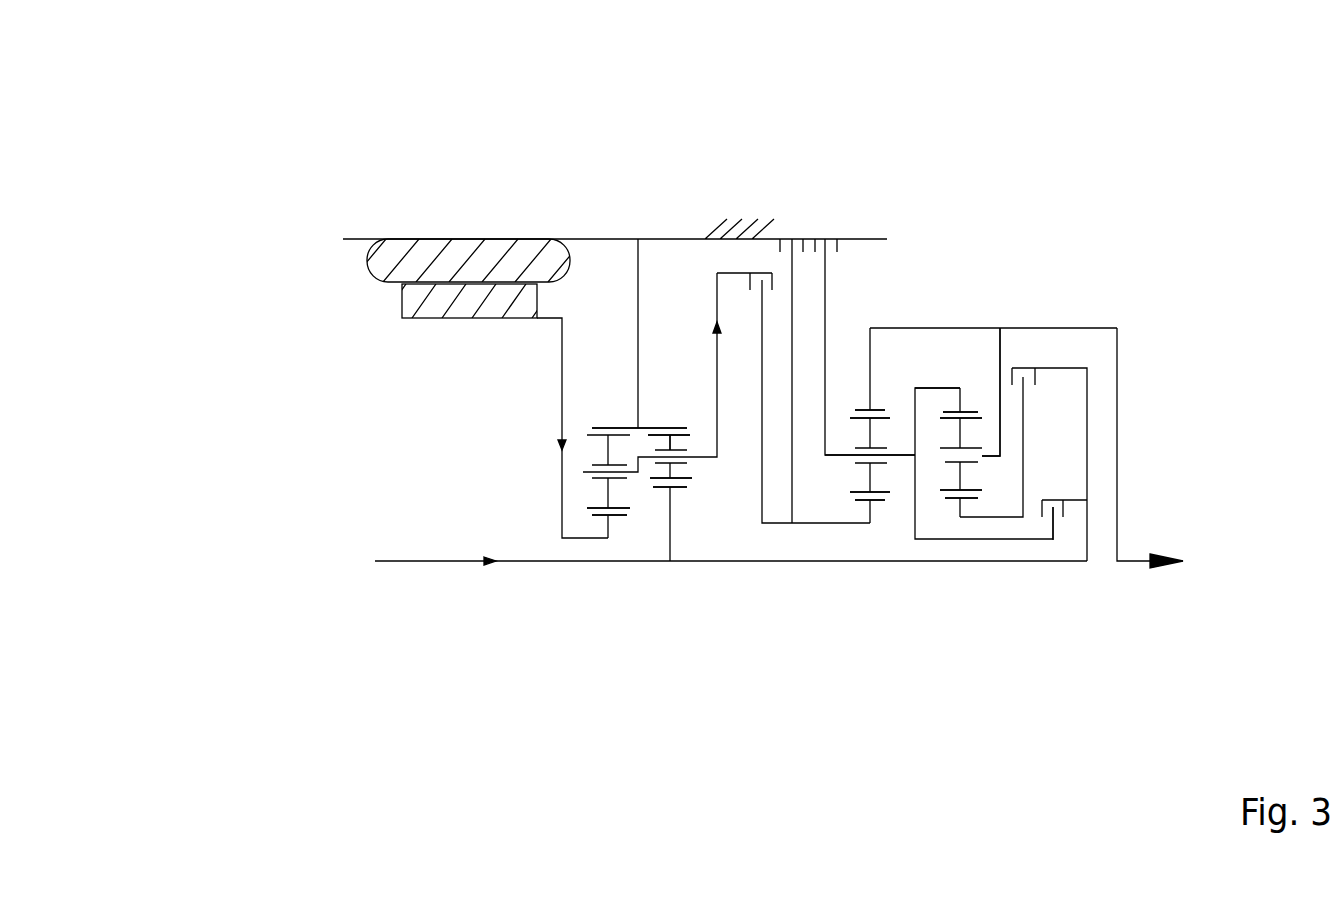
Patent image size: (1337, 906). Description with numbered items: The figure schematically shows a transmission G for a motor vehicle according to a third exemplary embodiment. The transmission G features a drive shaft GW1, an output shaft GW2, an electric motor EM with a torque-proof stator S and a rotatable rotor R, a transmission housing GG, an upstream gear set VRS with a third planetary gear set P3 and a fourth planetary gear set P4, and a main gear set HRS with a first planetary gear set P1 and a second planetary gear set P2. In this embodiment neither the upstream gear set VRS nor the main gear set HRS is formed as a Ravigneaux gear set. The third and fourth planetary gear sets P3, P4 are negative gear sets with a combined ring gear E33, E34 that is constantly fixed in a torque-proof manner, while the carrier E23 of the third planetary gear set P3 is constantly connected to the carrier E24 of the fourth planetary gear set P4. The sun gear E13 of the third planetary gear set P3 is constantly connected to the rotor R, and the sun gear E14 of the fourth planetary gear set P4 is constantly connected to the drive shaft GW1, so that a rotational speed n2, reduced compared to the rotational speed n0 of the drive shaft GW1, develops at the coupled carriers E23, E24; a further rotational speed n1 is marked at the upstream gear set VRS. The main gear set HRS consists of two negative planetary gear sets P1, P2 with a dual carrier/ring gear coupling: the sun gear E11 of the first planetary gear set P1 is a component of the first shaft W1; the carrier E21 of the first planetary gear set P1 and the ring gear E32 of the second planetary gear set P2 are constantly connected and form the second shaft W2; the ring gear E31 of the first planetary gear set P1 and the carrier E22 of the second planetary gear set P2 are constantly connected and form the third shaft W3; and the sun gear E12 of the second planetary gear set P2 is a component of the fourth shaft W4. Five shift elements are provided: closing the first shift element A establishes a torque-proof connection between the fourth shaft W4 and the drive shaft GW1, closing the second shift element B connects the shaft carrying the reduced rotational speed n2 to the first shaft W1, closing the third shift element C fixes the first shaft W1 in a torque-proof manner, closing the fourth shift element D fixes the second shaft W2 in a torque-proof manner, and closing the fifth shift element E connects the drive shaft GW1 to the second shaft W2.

The transmission G is at (393, 427).
The electric motor EM is at (464, 170).
The rotor R is at (440, 300).
The stator S is at (468, 268).
The transmission housing GG is at (577, 237).
The drive shaft GW1 is at (398, 565).
The output shaft GW2 is at (1127, 561).
The upstream gear set VRS is at (639, 588).
The main gear set HRS is at (915, 575).
The first planetary gear set P1 is at (870, 582).
The second planetary gear set P2 is at (961, 544).
The third planetary gear set P3 is at (608, 582).
The fourth planetary gear set P4 is at (670, 582).
The sun gear of the first planetary gear set E11 is at (863, 503).
The sun gear of the second planetary gear set E12 is at (953, 503).
The sun gear of the third planetary gear set E13 is at (598, 525).
The sun gear of the fourth planetary gear set E14 is at (678, 497).
The carrier of the first planetary gear set E21 is at (900, 447).
The carrier of the second planetary gear set E22 is at (988, 463).
The carrier of the third planetary gear set E23 is at (585, 480).
The carrier of the fourth planetary gear set E24 is at (703, 443).
The ring gear of the first planetary gear set E31 is at (858, 400).
The ring gear of the second planetary gear set E32 is at (967, 405).
The combined ring gear E33 is at (617, 417).
The combined ring gear E34 is at (635, 258).
The first shaft of the main gear set W1 is at (815, 523).
The second shaft of the main gear set W2 is at (1037, 540).
The third shaft of the main gear set W3 is at (1020, 328).
The fourth shaft of the main gear set W4 is at (1023, 423).
The first shift element A is at (1037, 357).
The second shift element B is at (757, 262).
The third shift element C is at (793, 228).
The fourth shift element D is at (830, 228).
The fifth shift element E is at (1063, 492).
The rotational speed of the drive shaft n0 is at (491, 575).
The rotational speed n1 is at (551, 442).
The reduced rotational speed n2 is at (705, 337).